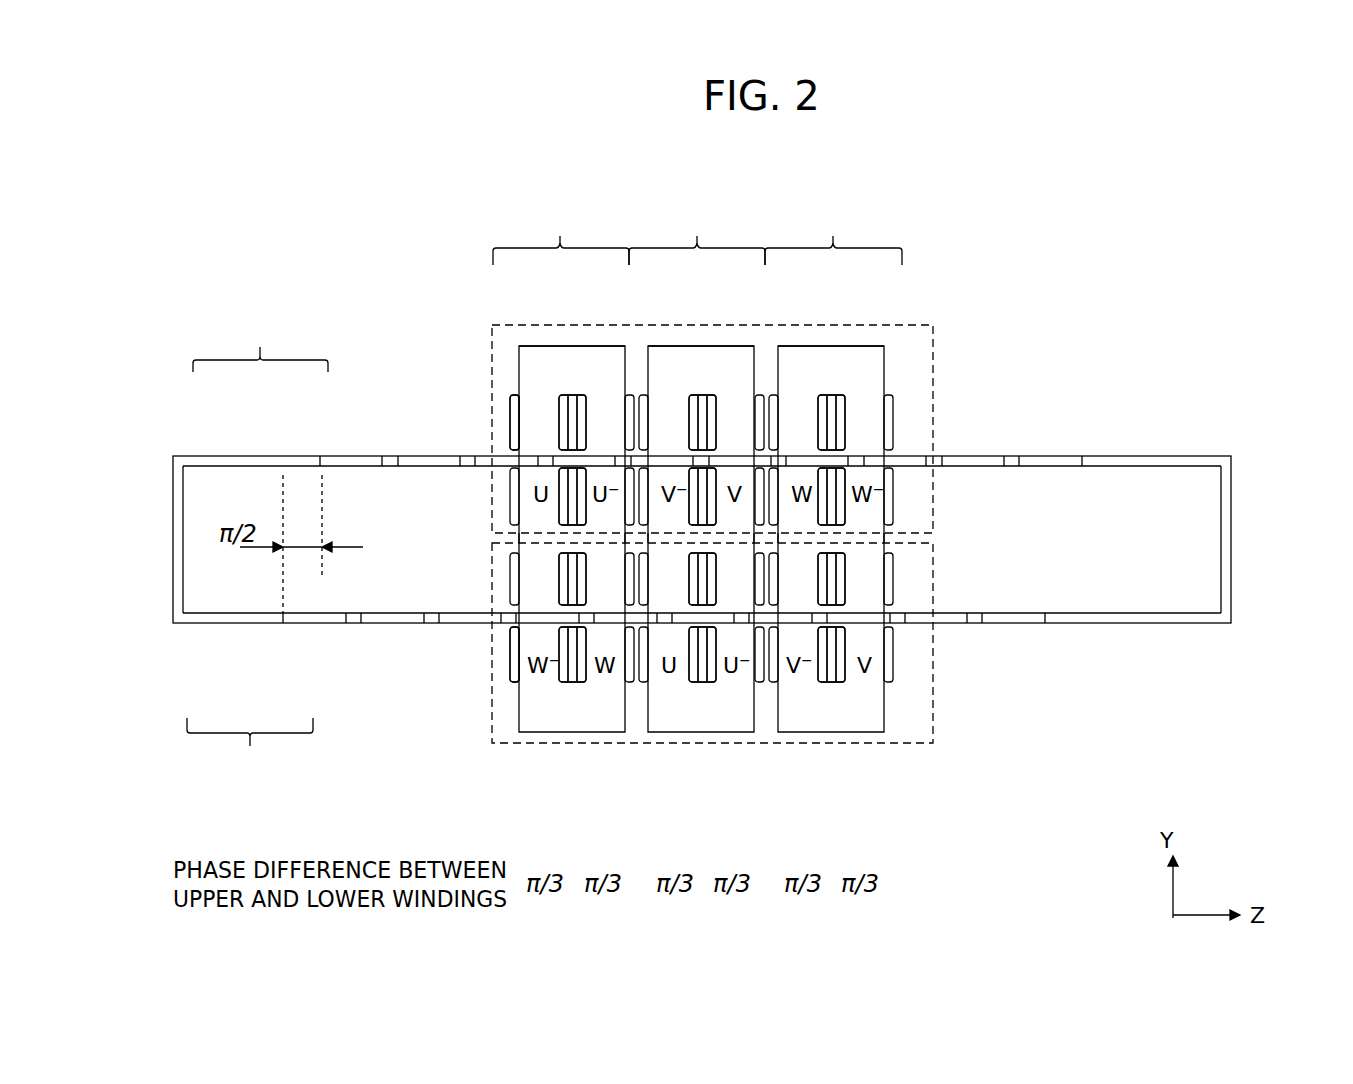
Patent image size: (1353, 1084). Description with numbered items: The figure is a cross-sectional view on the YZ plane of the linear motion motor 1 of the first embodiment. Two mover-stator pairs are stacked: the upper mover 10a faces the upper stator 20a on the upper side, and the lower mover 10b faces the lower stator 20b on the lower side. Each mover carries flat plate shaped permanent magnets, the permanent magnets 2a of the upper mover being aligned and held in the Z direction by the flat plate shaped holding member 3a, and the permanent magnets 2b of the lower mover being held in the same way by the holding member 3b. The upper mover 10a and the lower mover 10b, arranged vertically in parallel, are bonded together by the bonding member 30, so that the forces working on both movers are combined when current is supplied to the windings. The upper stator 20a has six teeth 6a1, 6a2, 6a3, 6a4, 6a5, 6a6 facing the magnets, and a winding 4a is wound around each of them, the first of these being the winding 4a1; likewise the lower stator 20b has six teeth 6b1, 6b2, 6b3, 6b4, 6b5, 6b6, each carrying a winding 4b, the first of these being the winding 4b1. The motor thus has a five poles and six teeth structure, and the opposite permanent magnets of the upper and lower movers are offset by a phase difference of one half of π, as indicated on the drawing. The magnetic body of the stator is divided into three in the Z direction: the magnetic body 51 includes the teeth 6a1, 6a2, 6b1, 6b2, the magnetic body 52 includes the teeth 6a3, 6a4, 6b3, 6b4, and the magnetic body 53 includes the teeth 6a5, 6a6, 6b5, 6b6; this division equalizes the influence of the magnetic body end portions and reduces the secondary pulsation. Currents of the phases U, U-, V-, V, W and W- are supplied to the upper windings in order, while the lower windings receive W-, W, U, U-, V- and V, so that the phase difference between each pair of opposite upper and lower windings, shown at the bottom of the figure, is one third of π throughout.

The linear motion motor 1 is at (296, 198).
The permanent magnet 2a is at (353, 457).
The permanent magnet 2b is at (318, 624).
The holding member 3a is at (253, 457).
The holding member 3b is at (233, 624).
The upper mover 10a is at (260, 341).
The lower mover 10b is at (250, 753).
The winding 4a is at (513, 497).
The winding 4b is at (513, 570).
The winding 4a1 is at (512, 410).
The winding 4b1 is at (513, 668).
The tooth 6a1 is at (540, 433).
The tooth 6a2 is at (605, 433).
The tooth 6a3 is at (671, 433).
The tooth 6a4 is at (733, 433).
The tooth 6a5 is at (800, 433).
The tooth 6a6 is at (865, 433).
The tooth 6b1 is at (542, 593).
The tooth 6b2 is at (606, 593).
The tooth 6b3 is at (670, 593).
The tooth 6b4 is at (735, 593).
The tooth 6b5 is at (800, 593).
The tooth 6b6 is at (865, 593).
The upper stator 20a is at (933, 410).
The lower stator 20b is at (933, 712).
The bonding member 30 is at (173, 543).
The magnetic body 51 is at (561, 234).
The magnetic body 52 is at (697, 234).
The magnetic body 53 is at (833, 234).